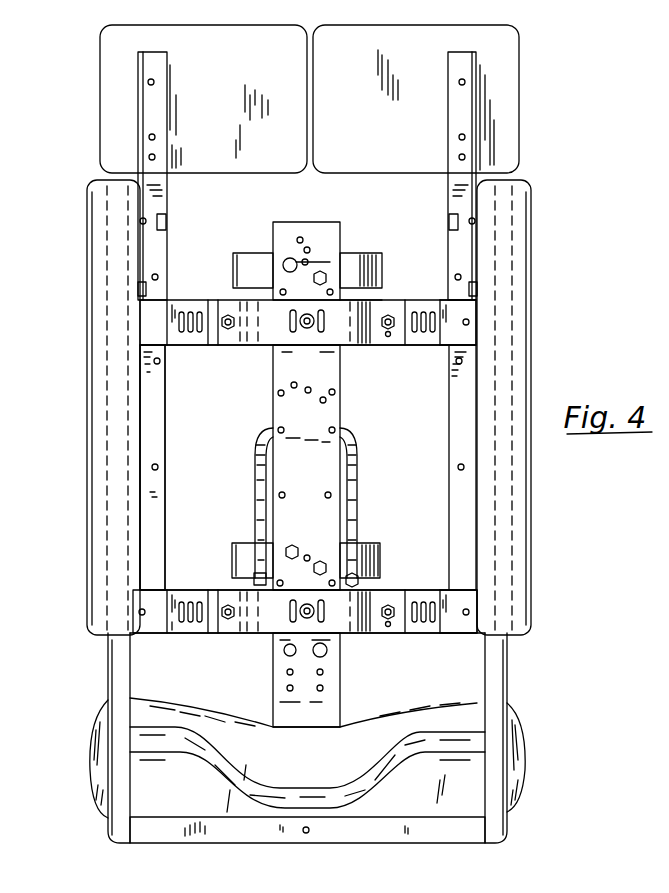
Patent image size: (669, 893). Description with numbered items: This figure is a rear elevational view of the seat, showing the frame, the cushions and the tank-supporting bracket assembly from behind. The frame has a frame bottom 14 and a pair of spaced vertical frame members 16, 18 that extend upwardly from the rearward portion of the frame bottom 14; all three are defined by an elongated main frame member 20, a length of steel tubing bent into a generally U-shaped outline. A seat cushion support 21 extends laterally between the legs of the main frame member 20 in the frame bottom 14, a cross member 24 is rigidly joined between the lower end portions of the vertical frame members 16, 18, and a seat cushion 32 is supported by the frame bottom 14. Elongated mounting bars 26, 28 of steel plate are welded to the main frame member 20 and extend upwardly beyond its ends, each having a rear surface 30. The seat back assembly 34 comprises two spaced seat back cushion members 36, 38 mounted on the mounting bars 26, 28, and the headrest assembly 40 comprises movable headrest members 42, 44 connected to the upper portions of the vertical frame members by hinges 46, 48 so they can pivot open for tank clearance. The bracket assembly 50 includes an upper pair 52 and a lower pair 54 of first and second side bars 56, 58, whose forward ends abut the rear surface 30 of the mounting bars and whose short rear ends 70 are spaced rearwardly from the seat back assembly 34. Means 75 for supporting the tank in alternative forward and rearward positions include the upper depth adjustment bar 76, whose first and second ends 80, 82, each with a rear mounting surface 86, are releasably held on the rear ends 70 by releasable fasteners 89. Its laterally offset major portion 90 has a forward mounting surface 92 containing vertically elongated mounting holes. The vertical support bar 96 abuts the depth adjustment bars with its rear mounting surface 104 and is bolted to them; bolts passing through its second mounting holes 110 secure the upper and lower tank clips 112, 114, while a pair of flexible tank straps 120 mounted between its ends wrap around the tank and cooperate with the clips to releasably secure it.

The frame bottom 14 is at (294, 738).
The vertical frame member 16 is at (110, 670).
The vertical frame member 18 is at (492, 668).
The main frame member 20 is at (493, 817).
The seat cushion support 21 is at (340, 840).
The cross member 24 is at (226, 776).
The mounting bar 26 is at (150, 524).
The mounting bar 28 is at (462, 504).
The rear surface 30 is at (150, 243).
The seat cushion 32 is at (304, 771).
The seat back assembly 34 is at (85, 232).
The seat back cushion member 36 is at (88, 192).
The seat back cushion member 38 is at (512, 230).
The headrest assembly 40 is at (305, 162).
The headrest member 42 is at (106, 34).
The headrest member 44 is at (505, 70).
The hinge 46 is at (172, 143).
The hinge 48 is at (446, 115).
The bracket assembly 50 is at (321, 452).
The upper pair of first and second side bars 52 is at (173, 298).
The lower pair of first and second side bars 54 is at (178, 588).
The first side bar 56 is at (185, 347).
The second side bar 58 is at (478, 326).
The rear end 70 is at (210, 347).
The means for supporting the tank in alternative forward and rearward positions 75 is at (392, 276).
The upper depth adjustment bar 76 is at (352, 347).
The first end 80 is at (232, 347).
The second end 82 is at (391, 347).
The rear mounting surface 86 is at (382, 302).
The releasable fastener 89 is at (228, 316).
The major portion 90 is at (275, 326).
The forward mounting surface 92 is at (259, 347).
The vertical support bar 96 is at (330, 315).
The rear mounting surface 104 is at (328, 480).
The second mounting holes 110 is at (305, 262).
The upper tank clip 112 is at (258, 265).
The lower tank clip 114 is at (243, 550).
The tank strap 120 is at (358, 470).